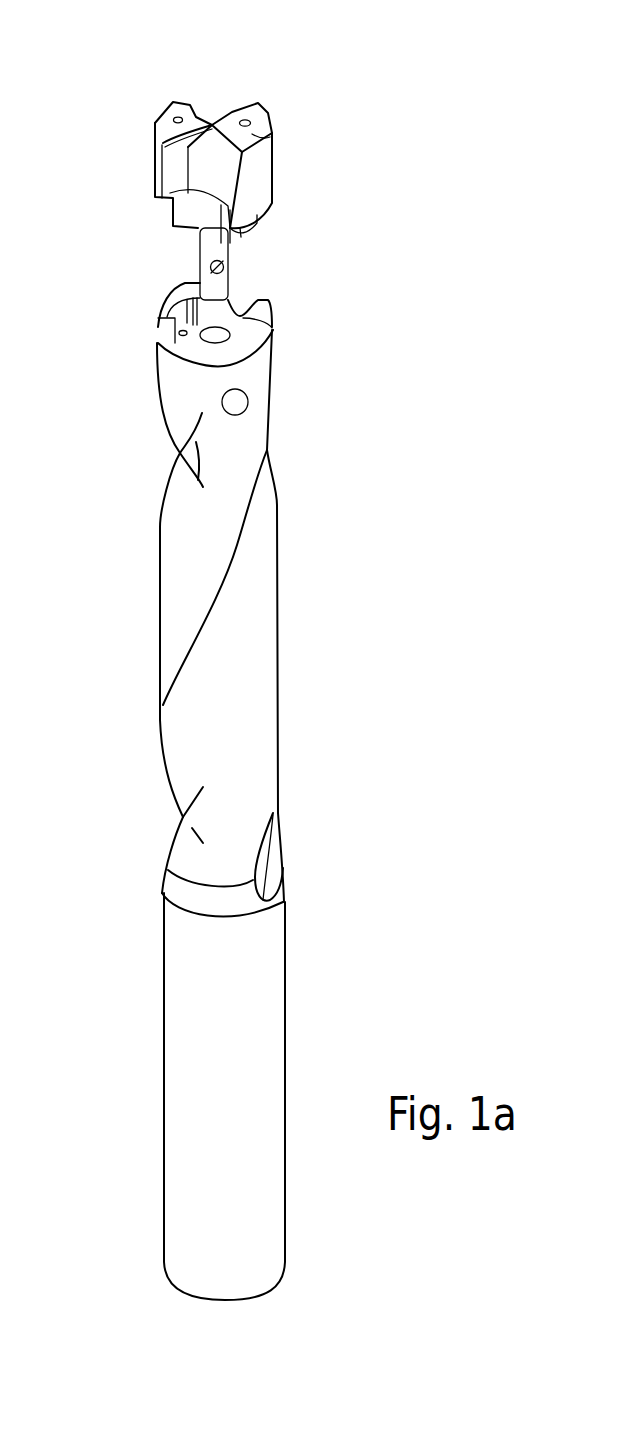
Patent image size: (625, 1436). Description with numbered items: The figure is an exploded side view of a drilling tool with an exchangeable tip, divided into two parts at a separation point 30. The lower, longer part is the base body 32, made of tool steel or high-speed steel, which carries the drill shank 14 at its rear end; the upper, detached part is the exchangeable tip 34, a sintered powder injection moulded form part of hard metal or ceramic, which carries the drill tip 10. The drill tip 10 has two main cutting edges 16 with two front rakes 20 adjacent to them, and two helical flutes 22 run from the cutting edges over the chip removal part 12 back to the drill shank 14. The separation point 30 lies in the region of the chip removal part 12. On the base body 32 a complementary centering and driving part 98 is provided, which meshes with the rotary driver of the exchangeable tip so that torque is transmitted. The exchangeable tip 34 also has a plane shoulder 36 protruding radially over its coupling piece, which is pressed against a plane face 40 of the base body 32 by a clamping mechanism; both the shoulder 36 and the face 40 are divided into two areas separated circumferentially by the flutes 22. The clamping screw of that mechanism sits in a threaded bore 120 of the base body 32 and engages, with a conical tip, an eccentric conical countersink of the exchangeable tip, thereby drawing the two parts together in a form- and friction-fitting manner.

The drill tip 10 is at (235, 108).
The main cutting edges 16 is at (223, 118).
The front rakes 20 is at (283, 120).
The exchangeable tip 34 is at (262, 184).
The plane shoulder 36 is at (260, 218).
The separation point 30 is at (265, 300).
The plane face 40 is at (273, 323).
The centering and driving part 98 is at (157, 332).
The threaded bore 120 is at (248, 400).
The chip removal part 12 is at (243, 528).
The helical flutes 22 is at (260, 597).
The base body 32 is at (262, 643).
The drill shank 14 is at (255, 997).